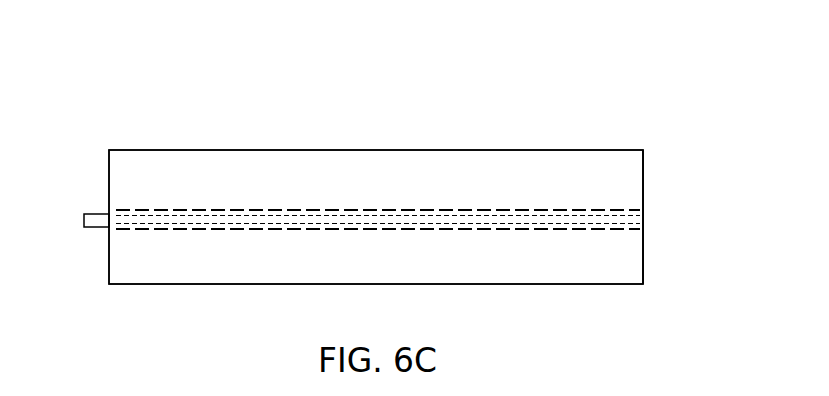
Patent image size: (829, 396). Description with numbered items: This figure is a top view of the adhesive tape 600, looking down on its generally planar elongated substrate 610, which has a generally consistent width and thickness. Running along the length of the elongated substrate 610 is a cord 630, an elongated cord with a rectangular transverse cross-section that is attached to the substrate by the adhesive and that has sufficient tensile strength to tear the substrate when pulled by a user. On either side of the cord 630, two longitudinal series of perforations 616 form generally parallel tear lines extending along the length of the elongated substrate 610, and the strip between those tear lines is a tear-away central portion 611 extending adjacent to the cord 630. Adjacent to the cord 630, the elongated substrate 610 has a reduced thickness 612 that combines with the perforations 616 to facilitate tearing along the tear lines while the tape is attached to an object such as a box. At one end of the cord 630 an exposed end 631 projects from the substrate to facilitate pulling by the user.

The adhesive tape 600 is at (102, 108).
The elongated substrate 610 is at (288, 167).
The tear-away central portion 611 is at (402, 222).
The reduced thickness 612 is at (238, 210).
The perforations 616 is at (502, 212).
The cord 630 is at (644, 220).
The exposed end 631 is at (90, 213).